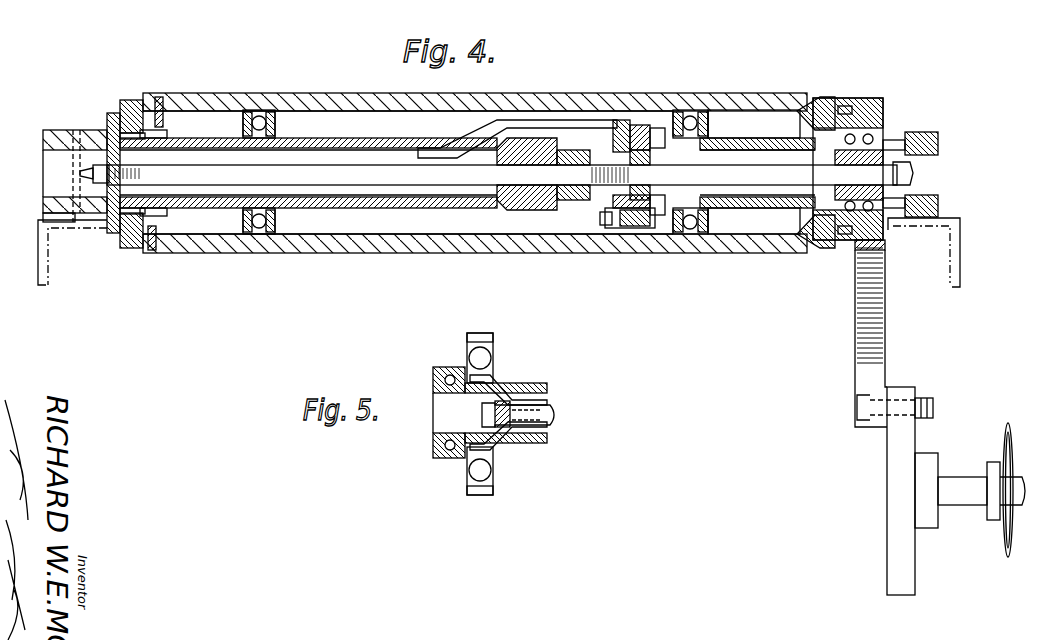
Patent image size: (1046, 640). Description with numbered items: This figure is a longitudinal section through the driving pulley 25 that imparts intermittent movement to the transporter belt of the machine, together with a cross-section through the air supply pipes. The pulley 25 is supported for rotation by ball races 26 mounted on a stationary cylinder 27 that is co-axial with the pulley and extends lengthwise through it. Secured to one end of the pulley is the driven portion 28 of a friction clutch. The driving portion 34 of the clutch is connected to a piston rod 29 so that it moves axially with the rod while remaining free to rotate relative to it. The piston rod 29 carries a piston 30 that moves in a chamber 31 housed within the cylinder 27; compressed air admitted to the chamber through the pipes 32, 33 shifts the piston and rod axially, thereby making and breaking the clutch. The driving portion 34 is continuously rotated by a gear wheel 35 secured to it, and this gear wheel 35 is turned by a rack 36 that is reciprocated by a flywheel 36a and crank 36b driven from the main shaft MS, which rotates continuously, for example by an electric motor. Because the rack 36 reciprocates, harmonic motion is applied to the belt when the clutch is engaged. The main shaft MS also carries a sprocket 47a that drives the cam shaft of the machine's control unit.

In FIG. 4, the pulley 25 is at (510, 96).
In FIG. 4, the ball races 26 is at (252, 136).
In FIG. 4, the stationary cylinder 27 is at (313, 138).
In FIG. 5, the stationary cylinder 27 is at (515, 450).
In FIG. 4, the driven portion of friction clutch 28 is at (812, 97).
In FIG. 4, the piston rod 29 is at (762, 172).
In FIG. 4, the piston 30 is at (668, 190).
In FIG. 4, the chamber 31 is at (612, 140).
In FIG. 4, the pipe 32 is at (543, 122).
In FIG. 5, the pipe 32 is at (537, 397).
In FIG. 5, the pipe 33 is at (538, 434).
In FIG. 4, the driving portion of clutch 34 is at (826, 100).
In FIG. 4, the gear wheel 35 is at (880, 250).
In FIG. 4, the rack 36 is at (855, 268).
In FIG. 4, the flywheel 36a is at (887, 525).
In FIG. 4, the crank 36b is at (866, 424).
In FIG. 4, the sprocket 47a is at (1005, 428).
In FIG. 4, the main shaft MS is at (1020, 488).